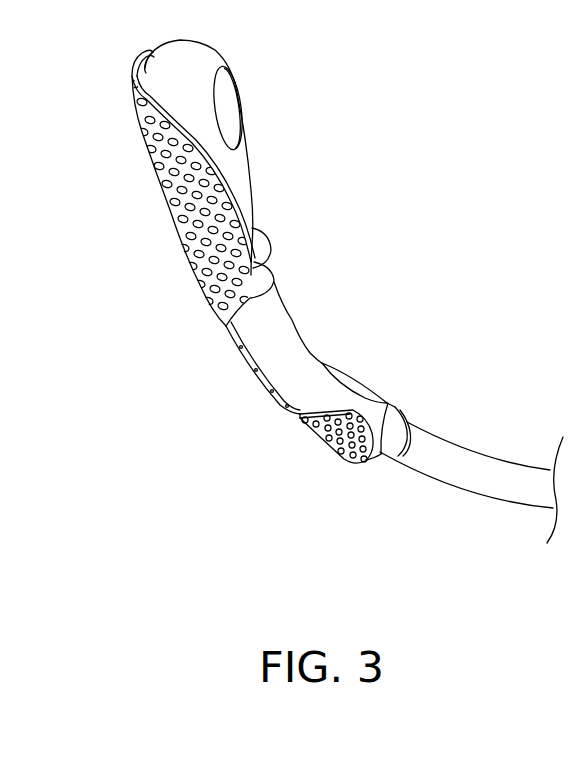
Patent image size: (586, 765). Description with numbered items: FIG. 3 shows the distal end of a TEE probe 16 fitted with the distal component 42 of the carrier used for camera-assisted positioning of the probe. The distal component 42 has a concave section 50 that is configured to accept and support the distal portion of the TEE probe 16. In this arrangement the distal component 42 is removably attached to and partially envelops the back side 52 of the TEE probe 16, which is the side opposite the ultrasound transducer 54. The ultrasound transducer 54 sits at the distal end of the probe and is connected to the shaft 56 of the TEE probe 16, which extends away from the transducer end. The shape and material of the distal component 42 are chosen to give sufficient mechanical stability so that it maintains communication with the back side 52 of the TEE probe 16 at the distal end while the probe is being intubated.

The TEE probe 16 is at (186, 60).
The distal component 42 is at (190, 210).
The concave section 50 is at (148, 68).
The back side 52 is at (158, 96).
The ultrasound transducer 54 is at (228, 110).
The shaft 56 is at (440, 467).